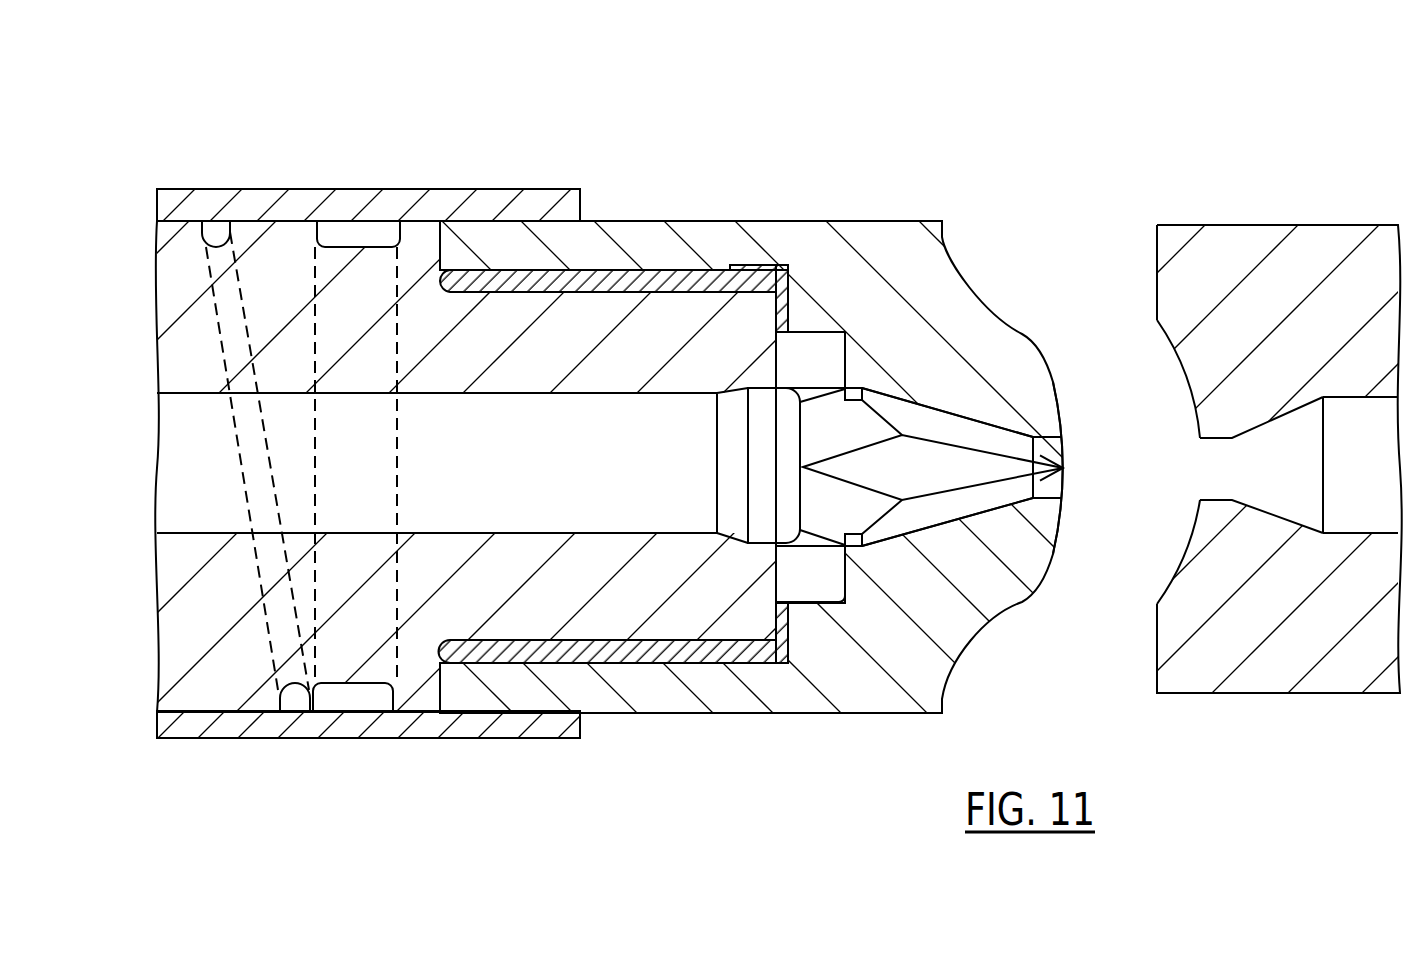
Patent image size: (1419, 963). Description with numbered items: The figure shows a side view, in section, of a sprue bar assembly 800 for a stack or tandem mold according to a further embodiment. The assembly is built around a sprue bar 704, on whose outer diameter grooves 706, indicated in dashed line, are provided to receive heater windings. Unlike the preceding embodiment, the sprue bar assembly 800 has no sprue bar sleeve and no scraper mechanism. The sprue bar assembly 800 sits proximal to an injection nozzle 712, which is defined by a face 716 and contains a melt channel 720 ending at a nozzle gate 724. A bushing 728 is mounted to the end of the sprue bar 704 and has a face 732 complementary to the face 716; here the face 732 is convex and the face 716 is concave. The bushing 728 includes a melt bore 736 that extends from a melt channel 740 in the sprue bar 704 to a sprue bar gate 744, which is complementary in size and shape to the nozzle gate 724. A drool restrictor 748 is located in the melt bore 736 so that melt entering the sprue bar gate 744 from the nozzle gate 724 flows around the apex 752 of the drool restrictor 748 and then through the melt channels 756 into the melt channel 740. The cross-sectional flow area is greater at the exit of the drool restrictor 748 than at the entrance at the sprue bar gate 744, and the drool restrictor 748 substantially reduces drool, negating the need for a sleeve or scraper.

The sprue bar assembly 800 is at (862, 141).
The sprue bar 704 is at (157, 205).
The grooves 706 is at (262, 578).
The injection nozzle 712 is at (1257, 224).
The face 716 is at (1158, 332).
The melt channel 720 is at (1382, 486).
The nozzle gate 724 is at (1258, 486).
The bushing 728 is at (965, 283).
The face 732 is at (1052, 380).
The melt bore 736 is at (921, 412).
The melt channel 740 is at (553, 481).
The sprue bar gate 744 is at (1062, 447).
The drool restrictor 748 is at (828, 373).
The insert tip 752 is at (1063, 468).
The melt channels 756 is at (857, 440).